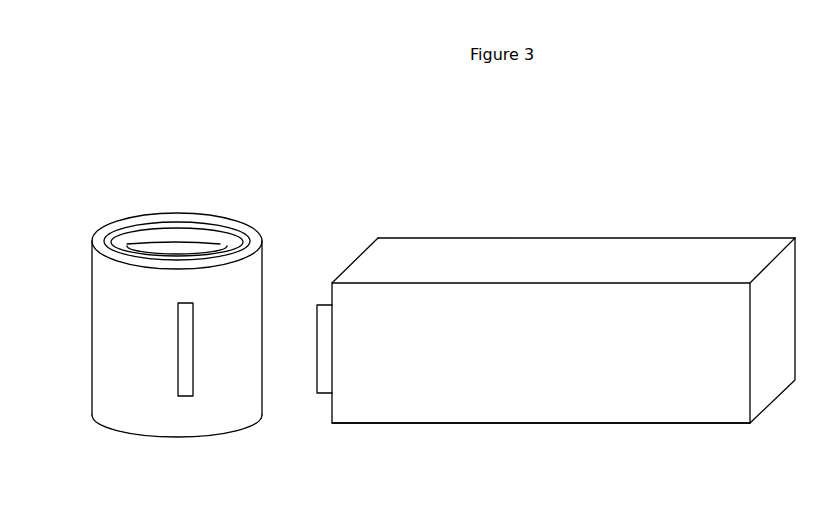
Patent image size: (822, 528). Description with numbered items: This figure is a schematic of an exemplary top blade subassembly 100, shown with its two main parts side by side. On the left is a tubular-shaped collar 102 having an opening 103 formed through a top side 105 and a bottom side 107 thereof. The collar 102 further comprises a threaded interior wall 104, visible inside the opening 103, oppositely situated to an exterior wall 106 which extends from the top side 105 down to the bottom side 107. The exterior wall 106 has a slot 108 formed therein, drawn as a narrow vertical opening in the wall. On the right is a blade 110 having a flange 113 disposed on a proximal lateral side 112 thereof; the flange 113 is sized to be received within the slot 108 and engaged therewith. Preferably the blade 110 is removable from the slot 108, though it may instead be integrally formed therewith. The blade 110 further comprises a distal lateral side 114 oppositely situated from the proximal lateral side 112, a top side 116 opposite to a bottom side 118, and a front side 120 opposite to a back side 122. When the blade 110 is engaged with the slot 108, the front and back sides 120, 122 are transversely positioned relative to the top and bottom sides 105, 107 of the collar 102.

The top blade subassembly 100 is at (283, 116).
The collar 102 is at (150, 195).
The opening 103 is at (182, 232).
The threaded interior wall 104 is at (223, 243).
The top side 105 is at (118, 225).
The exterior wall 106 is at (115, 292).
The bottom side 107 is at (177, 440).
The slot 108 is at (186, 368).
The blade 110 is at (530, 213).
The proximal lateral side 112 is at (350, 260).
The flange 113 is at (322, 372).
The distal lateral side 114 is at (765, 380).
The top side 116 is at (593, 248).
The bottom side 118 is at (637, 423).
The front side 120 is at (527, 402).
The back side 122 is at (713, 238).